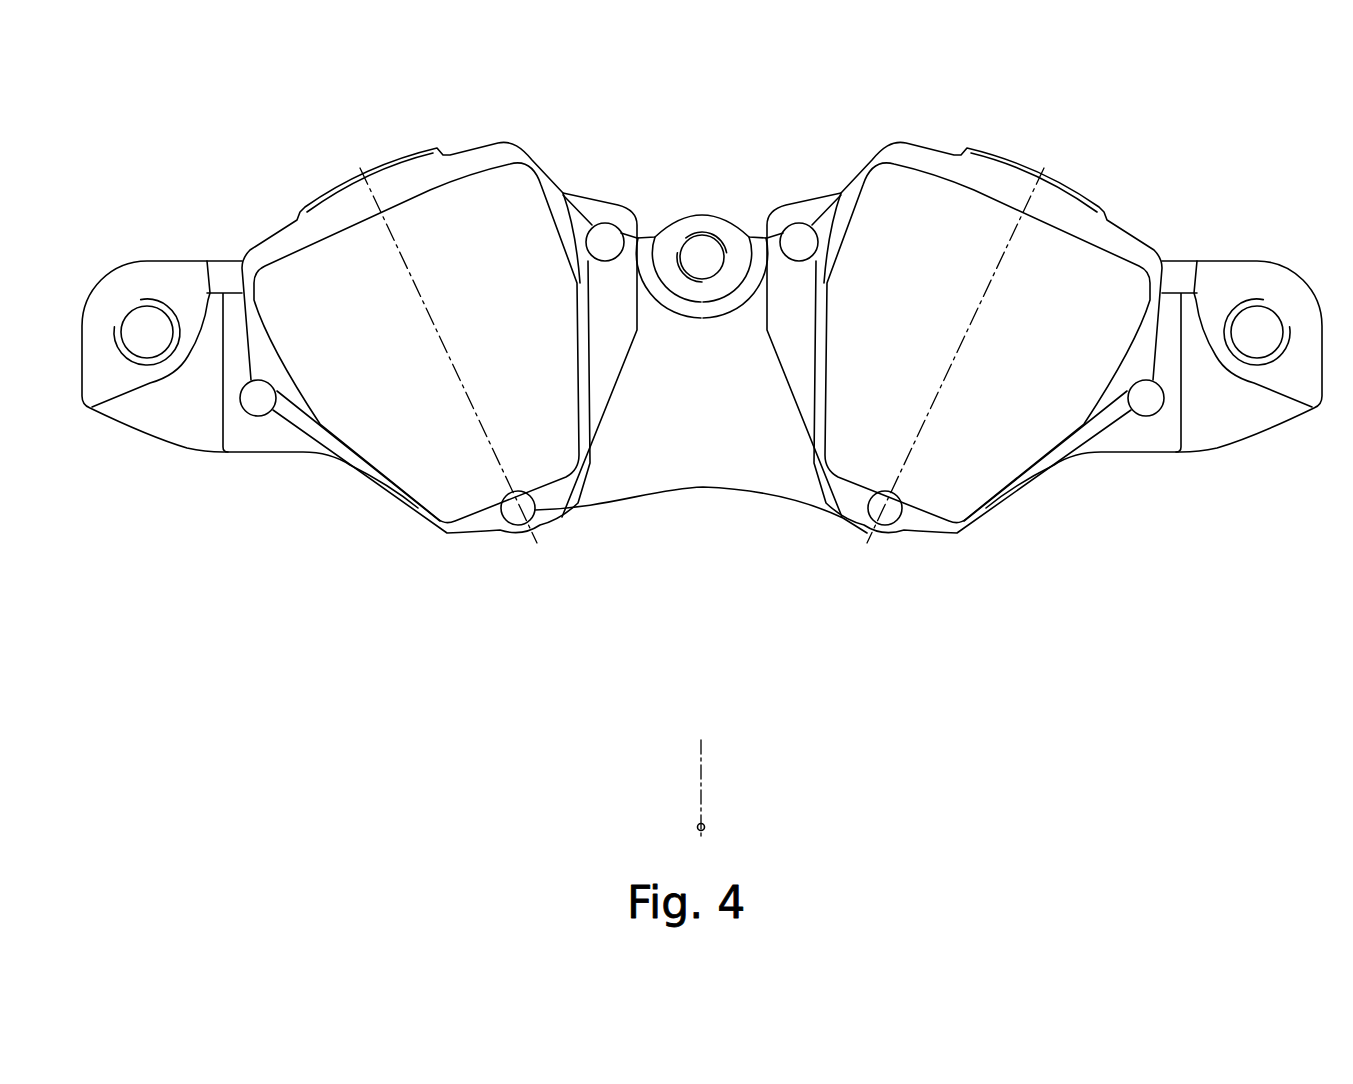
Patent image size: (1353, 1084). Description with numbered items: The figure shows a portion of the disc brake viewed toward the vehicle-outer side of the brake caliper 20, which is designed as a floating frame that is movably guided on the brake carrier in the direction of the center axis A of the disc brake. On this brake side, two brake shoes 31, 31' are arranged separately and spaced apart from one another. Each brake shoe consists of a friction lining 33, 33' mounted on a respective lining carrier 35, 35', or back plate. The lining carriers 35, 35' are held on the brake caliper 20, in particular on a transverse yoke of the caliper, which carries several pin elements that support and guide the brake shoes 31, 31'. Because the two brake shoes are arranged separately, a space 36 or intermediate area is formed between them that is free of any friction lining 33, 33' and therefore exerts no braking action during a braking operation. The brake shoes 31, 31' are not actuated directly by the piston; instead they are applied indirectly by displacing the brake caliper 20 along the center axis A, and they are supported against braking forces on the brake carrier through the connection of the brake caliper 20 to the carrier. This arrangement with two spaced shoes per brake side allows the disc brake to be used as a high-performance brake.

The brake caliper 20 is at (757, 490).
The brake shoe 31 is at (416, 404).
The brake shoe 31' is at (988, 295).
The friction lining 33 is at (416, 353).
The friction lining 33' is at (987, 353).
The lining carrier 35 is at (398, 135).
The lining carrier 35' is at (1127, 148).
The space 36 is at (703, 347).
The center axis A is at (704, 824).